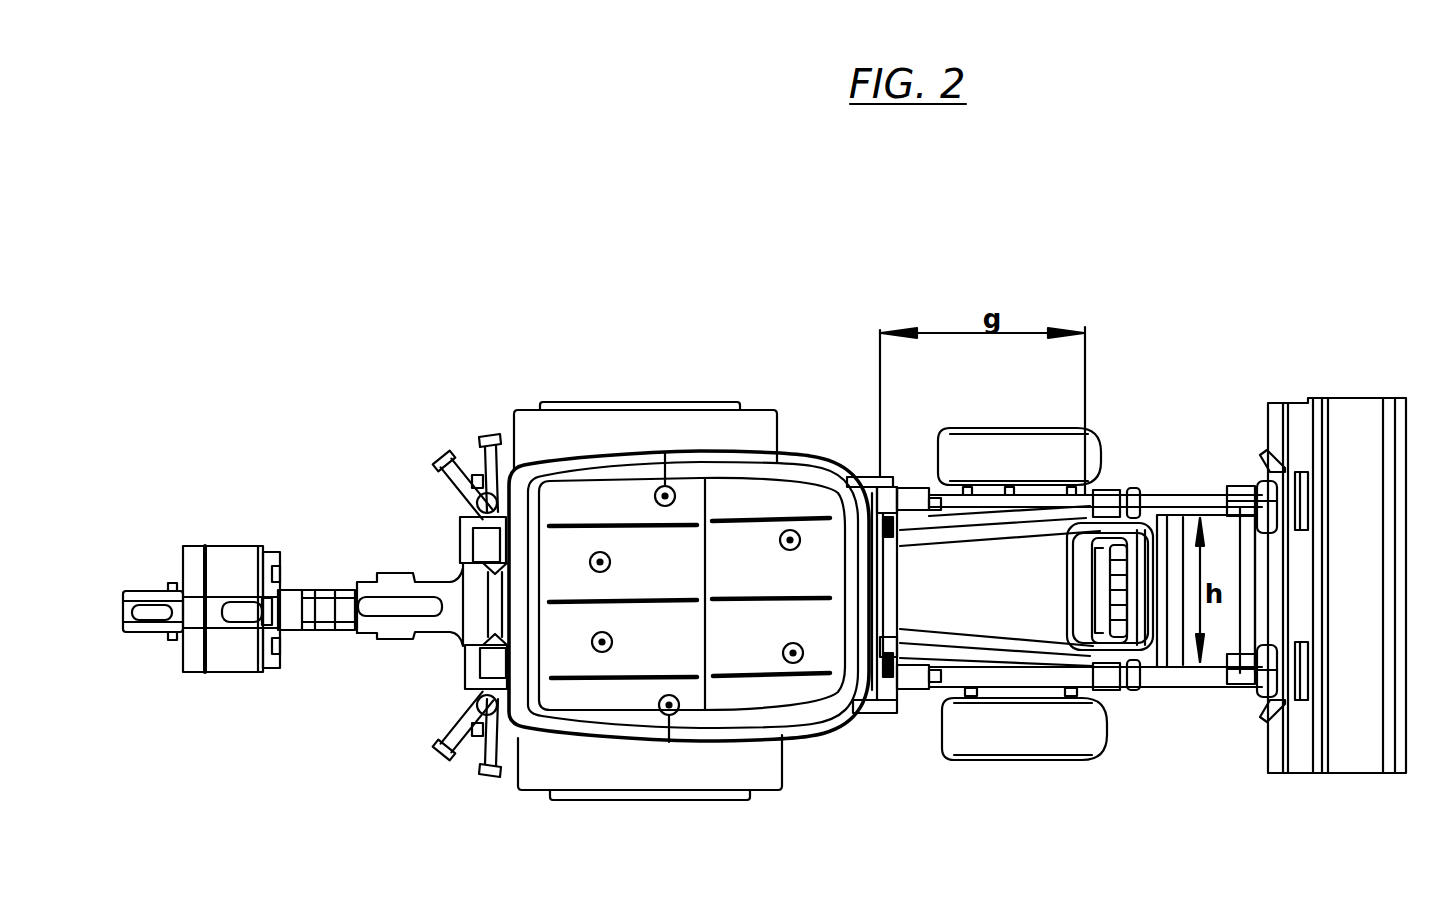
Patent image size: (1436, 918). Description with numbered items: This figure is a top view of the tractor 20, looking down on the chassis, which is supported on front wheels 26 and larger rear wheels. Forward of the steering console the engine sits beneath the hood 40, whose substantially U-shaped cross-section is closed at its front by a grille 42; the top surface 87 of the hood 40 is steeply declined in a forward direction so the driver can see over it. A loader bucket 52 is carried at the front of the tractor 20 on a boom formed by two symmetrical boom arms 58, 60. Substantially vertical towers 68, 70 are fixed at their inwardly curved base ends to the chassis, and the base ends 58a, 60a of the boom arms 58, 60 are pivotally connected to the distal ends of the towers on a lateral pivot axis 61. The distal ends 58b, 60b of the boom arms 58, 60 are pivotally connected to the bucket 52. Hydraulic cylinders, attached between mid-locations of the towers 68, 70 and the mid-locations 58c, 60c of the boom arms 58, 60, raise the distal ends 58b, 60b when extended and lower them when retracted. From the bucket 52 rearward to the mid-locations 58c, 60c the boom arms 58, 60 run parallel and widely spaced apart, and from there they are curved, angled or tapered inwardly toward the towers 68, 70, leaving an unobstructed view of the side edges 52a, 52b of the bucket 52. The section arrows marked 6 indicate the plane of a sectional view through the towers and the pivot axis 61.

The tractor 20 is at (676, 358).
The front wheels 26 is at (1104, 483).
The hood 40 is at (1120, 488).
The grille 42 is at (1095, 593).
The loader bucket 52 is at (1347, 398).
The side edge of the bucket 52a is at (1274, 777).
The side edge of the bucket 52b is at (1275, 405).
The boom arm 58 is at (1062, 678).
The base end of boom arm 58a is at (930, 688).
The distal end of boom arm 58b is at (1262, 700).
The mid-location of boom arm 58c is at (1092, 665).
The boom arm 60 is at (1057, 507).
The base end of boom arm 60a is at (925, 490).
The distal end of boom arm 60b is at (1255, 478).
The mid-location of boom arm 60c is at (1090, 492).
The lateral pivot axis 61 is at (880, 363).
The tower 68 is at (903, 712).
The tower 70 is at (900, 488).
The top surface of the hood 87 is at (993, 608).
The section line for FIG. 6 is at (892, 380).